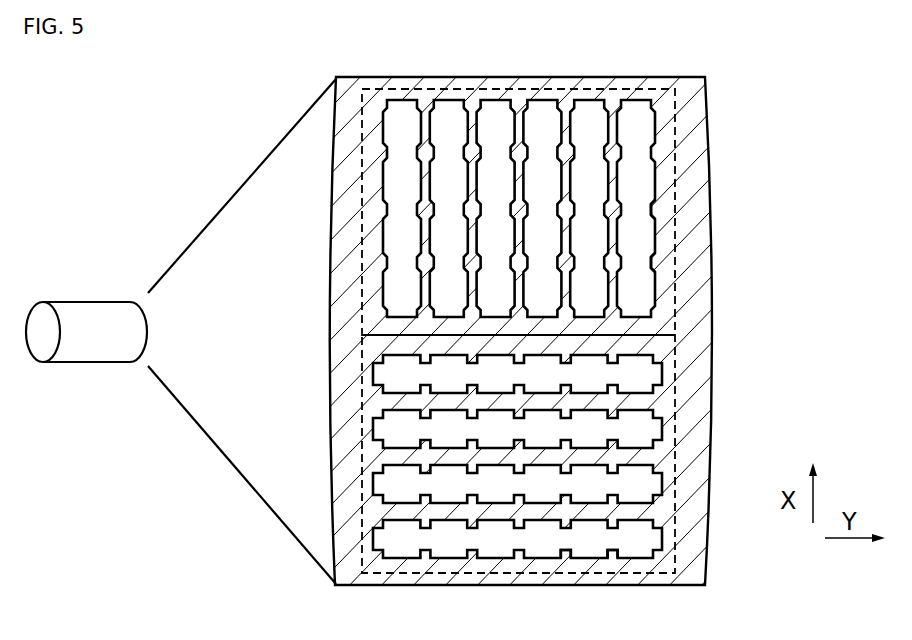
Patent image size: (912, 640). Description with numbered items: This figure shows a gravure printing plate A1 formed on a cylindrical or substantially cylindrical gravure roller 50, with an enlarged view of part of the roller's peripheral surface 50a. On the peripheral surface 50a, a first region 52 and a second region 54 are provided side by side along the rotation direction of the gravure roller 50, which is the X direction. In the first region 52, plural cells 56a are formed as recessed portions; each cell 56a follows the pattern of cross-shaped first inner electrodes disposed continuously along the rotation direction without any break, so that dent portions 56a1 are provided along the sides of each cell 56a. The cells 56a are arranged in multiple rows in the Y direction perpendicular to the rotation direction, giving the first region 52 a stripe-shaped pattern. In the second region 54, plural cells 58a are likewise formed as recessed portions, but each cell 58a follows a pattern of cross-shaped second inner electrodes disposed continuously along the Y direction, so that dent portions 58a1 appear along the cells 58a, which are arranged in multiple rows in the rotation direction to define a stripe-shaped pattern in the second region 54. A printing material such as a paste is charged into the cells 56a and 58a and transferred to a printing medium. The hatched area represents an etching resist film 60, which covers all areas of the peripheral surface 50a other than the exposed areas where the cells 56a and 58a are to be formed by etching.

The gravure roller 50 is at (66, 297).
The peripheral surface 50a is at (102, 318).
The etching resist film 60 is at (606, 97).
The first region 52 is at (677, 147).
The second region 54 is at (677, 372).
The cells 56a is at (592, 150).
The dent portions 56a1 is at (658, 211).
The cells 58a is at (630, 378).
The dent portions 58a1 is at (567, 562).
The gravure printing plate A1 is at (349, 76).